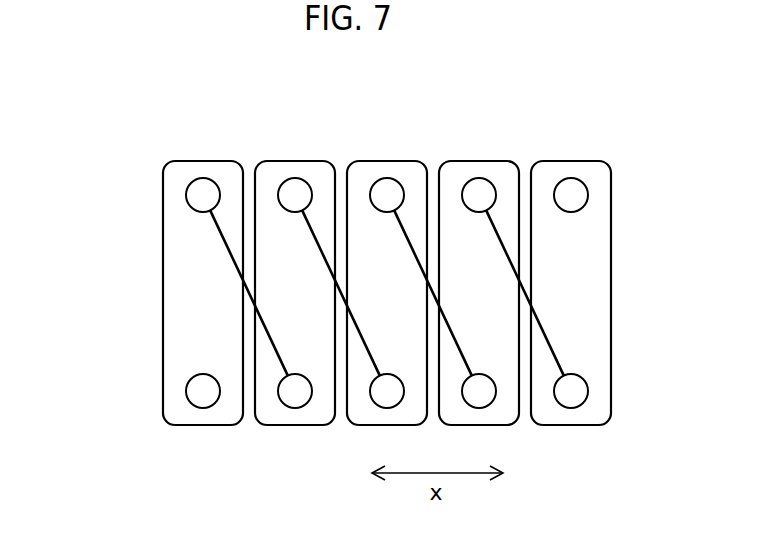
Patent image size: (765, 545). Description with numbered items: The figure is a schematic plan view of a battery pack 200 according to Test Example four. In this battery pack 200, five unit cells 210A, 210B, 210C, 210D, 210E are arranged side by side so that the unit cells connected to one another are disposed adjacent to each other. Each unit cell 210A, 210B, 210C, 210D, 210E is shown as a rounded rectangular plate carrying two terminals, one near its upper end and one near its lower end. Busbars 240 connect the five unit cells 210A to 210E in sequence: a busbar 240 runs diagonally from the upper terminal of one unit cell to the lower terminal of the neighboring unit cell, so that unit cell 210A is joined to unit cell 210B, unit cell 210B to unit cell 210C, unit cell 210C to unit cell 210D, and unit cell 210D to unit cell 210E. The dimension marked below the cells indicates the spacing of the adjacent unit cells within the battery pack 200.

The battery pack 200 is at (91, 95).
The unit cell 210A is at (210, 159).
The unit cell 210B is at (302, 159).
The unit cell 210C is at (394, 159).
The unit cell 210D is at (486, 159).
The unit cell 210E is at (578, 159).
The busbar 240 is at (557, 352).